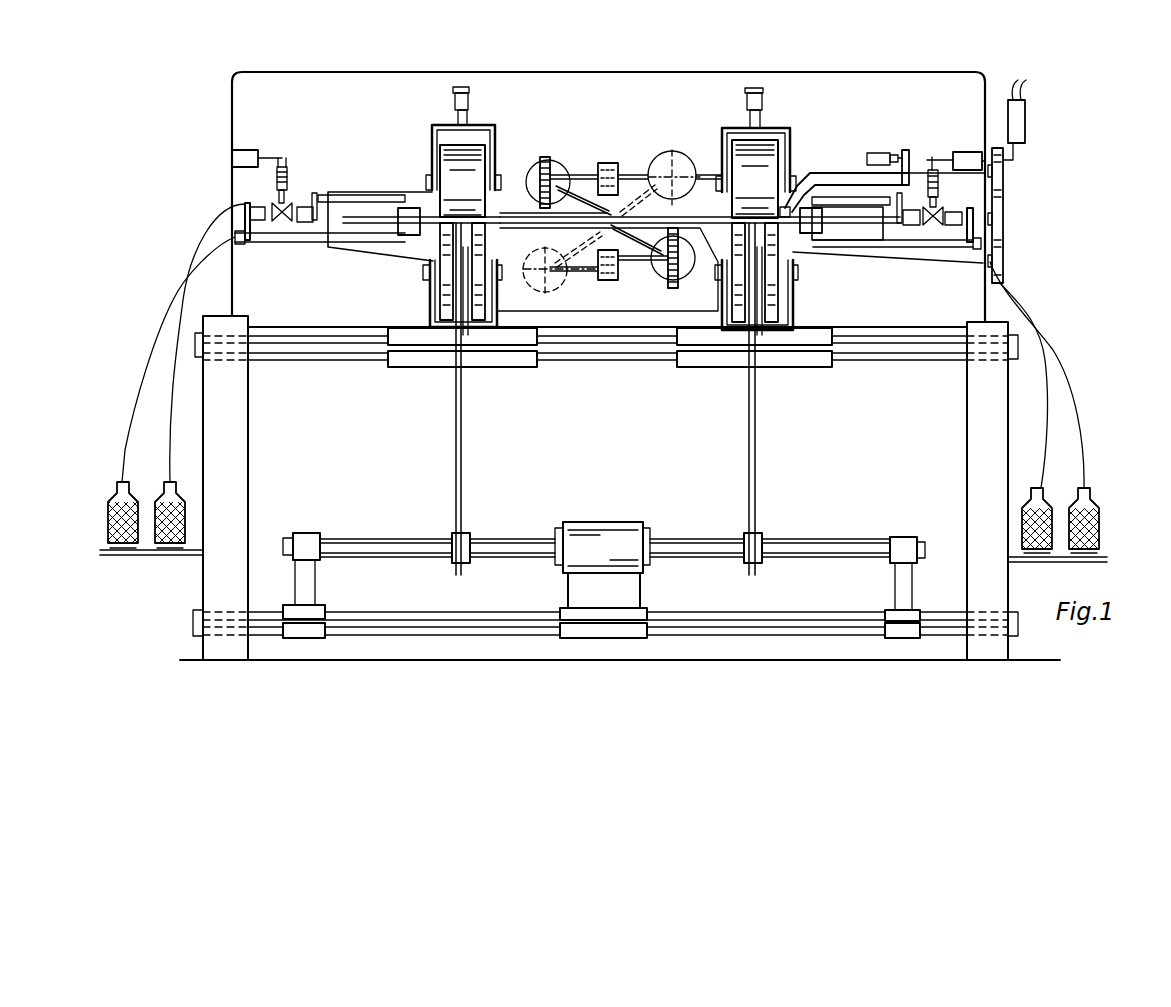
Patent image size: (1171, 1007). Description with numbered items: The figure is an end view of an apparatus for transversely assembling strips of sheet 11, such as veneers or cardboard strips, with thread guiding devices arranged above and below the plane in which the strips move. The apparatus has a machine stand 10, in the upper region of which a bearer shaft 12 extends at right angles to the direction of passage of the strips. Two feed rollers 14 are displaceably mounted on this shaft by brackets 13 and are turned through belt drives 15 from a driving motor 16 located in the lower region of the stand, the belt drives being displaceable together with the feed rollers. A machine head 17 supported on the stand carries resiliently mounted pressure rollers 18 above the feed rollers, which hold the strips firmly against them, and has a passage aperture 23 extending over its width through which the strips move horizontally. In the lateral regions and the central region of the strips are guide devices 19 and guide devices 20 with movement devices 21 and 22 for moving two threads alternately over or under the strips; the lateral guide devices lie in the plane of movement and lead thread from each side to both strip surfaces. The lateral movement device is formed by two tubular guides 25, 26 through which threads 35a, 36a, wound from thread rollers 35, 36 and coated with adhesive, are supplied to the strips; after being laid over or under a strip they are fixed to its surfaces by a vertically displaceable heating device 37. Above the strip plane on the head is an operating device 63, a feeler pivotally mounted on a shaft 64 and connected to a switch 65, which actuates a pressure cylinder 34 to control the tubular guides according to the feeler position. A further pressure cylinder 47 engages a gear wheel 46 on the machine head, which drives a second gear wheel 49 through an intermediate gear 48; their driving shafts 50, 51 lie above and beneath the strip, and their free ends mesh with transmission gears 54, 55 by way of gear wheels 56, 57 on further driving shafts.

The machine stand 10 is at (203, 395).
The strips of sheet 11 is at (430, 223).
The bearer shaft 12 is at (930, 362).
The brackets 13 is at (390, 367).
The feed rollers 14 is at (478, 312).
The belt drives 15 is at (456, 475).
The driving motor 16 is at (598, 525).
The machine head 17 is at (693, 115).
The pressure rollers 18 is at (440, 148).
The guide devices 19 is at (300, 232).
The guide devices 20 is at (578, 175).
The movement device 21 is at (286, 167).
The movement device 22 is at (540, 160).
The passage aperture 23 is at (503, 215).
The tubular guide 25 is at (336, 195).
The tubular guide 26 is at (373, 238).
The pressure cylinder 34 is at (240, 150).
The thread roller 35 is at (110, 500).
The thread 35a is at (132, 432).
The thread roller 36 is at (175, 482).
The thread 36a is at (168, 417).
The heating device 37 is at (400, 208).
The gear wheel 46 is at (1003, 183).
The pressure cylinder 47 is at (1025, 110).
The intermediate gear 48 is at (1003, 228).
The second gear wheel 49 is at (1003, 268).
The driving shaft 50 is at (710, 170).
The driving shaft 51 is at (836, 262).
The transmission gear 54 is at (610, 163).
The transmission gear 55 is at (570, 268).
The gear wheel 56 is at (620, 197).
The gear wheel 57 is at (606, 280).
The operating device 63 is at (824, 178).
The shaft 64 is at (905, 150).
The switch 65 is at (870, 153).